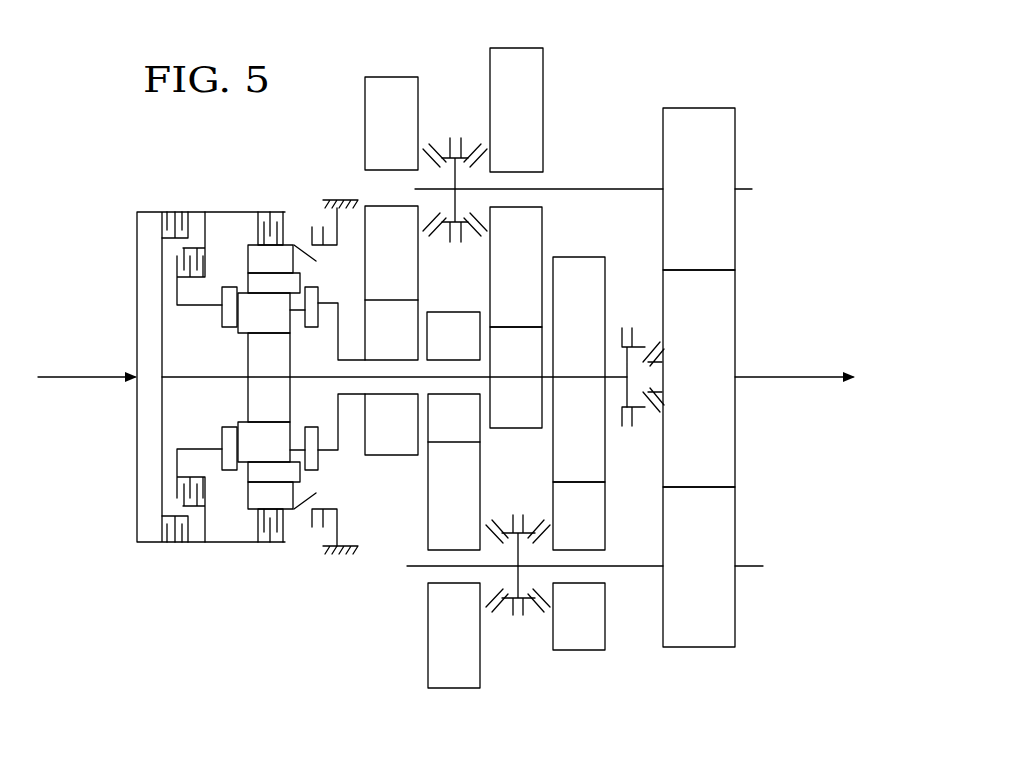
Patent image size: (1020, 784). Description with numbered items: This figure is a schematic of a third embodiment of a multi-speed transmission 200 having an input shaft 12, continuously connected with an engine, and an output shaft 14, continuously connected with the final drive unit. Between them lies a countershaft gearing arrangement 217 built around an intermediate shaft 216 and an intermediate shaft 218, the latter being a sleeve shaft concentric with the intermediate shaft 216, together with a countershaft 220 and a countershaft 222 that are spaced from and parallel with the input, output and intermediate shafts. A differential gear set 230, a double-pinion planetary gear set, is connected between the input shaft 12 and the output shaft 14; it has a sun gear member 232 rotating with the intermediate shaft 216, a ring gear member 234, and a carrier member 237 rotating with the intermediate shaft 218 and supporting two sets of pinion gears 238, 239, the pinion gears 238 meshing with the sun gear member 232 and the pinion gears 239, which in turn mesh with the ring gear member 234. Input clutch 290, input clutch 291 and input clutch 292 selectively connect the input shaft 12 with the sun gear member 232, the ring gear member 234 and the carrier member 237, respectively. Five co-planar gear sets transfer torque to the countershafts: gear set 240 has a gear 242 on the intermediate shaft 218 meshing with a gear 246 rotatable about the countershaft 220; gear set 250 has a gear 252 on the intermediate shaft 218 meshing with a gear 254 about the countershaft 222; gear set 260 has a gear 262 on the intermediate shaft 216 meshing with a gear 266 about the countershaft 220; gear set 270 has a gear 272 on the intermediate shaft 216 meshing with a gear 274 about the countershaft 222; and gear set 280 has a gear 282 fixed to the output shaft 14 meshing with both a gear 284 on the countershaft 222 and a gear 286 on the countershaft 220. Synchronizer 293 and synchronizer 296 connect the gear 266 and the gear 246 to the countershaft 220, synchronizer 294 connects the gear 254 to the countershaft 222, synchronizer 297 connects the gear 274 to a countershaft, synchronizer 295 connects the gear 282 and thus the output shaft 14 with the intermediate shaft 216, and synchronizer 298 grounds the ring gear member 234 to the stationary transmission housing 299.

The input shaft 12 is at (80, 380).
The output shaft 14 is at (787, 379).
The multi-speed transmission 200 is at (826, 180).
The intermediate shaft 216 is at (222, 380).
The countershaft gearing arrangement 217 is at (672, 50).
The intermediate shaft 218 is at (353, 398).
The countershaft 220 is at (608, 188).
The countershaft 222 is at (422, 568).
The differential gear set 230 is at (246, 540).
The sun gear member 232 is at (248, 402).
The ring gear member 234 is at (247, 493).
The carrier member 237 is at (221, 313).
The pinion gears 238 is at (238, 334).
The pinion gears 239 is at (248, 280).
The gear set 240 is at (399, 478).
The gear 242 is at (378, 458).
The gear 246 is at (419, 281).
The gear set 250 is at (442, 710).
The gear 252 is at (490, 446).
The gear 254 is at (427, 660).
The gear set 260 is at (543, 40).
The gear 262 is at (516, 430).
The gear 266 is at (544, 92).
The gear set 270 is at (606, 670).
The gear 272 is at (606, 279).
The gear 274 is at (571, 652).
The gear set 280 is at (708, 670).
The gear 282 is at (737, 312).
The gear 284 is at (737, 614).
The gear 286 is at (737, 138).
The input clutch 290 is at (128, 234).
The input clutch 291 is at (300, 216).
The input clutch 292 is at (156, 265).
The synchronizer 293 is at (472, 134).
The synchronizer 294 is at (497, 622).
The synchronizer 295 is at (644, 428).
The synchronizer 296 is at (437, 136).
The synchronizer 297 is at (536, 620).
The synchronizer 298 is at (326, 260).
The stationary transmission housing 299 is at (344, 200).